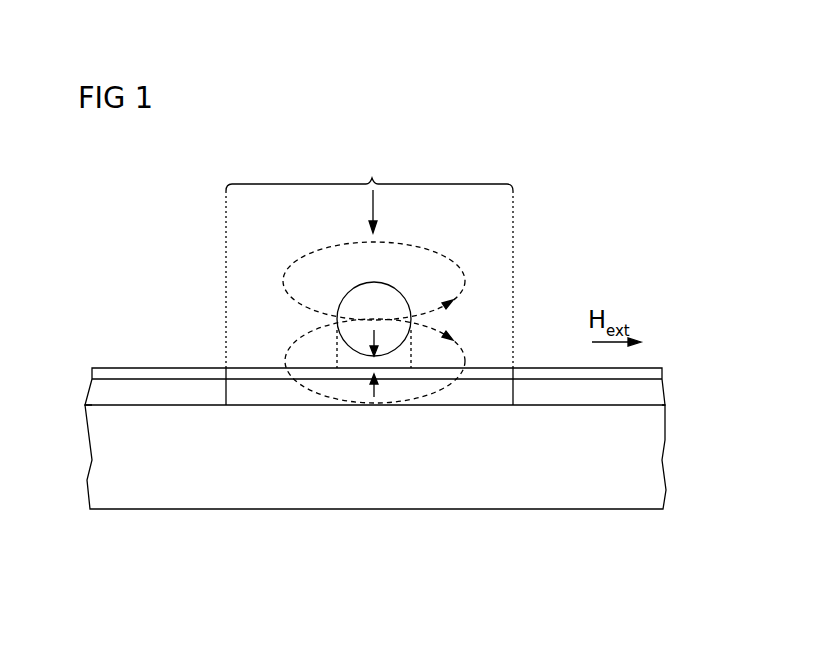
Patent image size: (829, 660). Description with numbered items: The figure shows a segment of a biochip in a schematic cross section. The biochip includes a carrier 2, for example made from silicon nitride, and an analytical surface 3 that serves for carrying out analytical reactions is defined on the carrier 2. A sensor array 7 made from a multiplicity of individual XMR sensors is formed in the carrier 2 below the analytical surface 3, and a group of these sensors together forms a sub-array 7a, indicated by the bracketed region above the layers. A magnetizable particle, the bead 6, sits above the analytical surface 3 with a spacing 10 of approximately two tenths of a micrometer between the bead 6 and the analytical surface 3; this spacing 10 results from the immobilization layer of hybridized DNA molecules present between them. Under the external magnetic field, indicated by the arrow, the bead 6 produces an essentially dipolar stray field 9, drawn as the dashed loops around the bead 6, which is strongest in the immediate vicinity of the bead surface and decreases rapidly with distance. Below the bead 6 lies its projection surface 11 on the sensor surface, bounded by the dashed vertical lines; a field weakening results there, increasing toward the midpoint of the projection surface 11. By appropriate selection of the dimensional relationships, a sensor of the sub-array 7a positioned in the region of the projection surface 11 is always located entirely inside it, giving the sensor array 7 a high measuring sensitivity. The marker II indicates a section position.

The carrier 2 is at (655, 456).
The analytical surface 3 is at (120, 366).
The magnetizable particle 6 is at (388, 306).
The sensor array 7 is at (199, 392).
The sub-array 7a is at (369, 257).
The stray field 9 is at (444, 257).
The spacing 10 is at (377, 363).
The projection surface 11 is at (407, 360).
The section line II is at (375, 200).